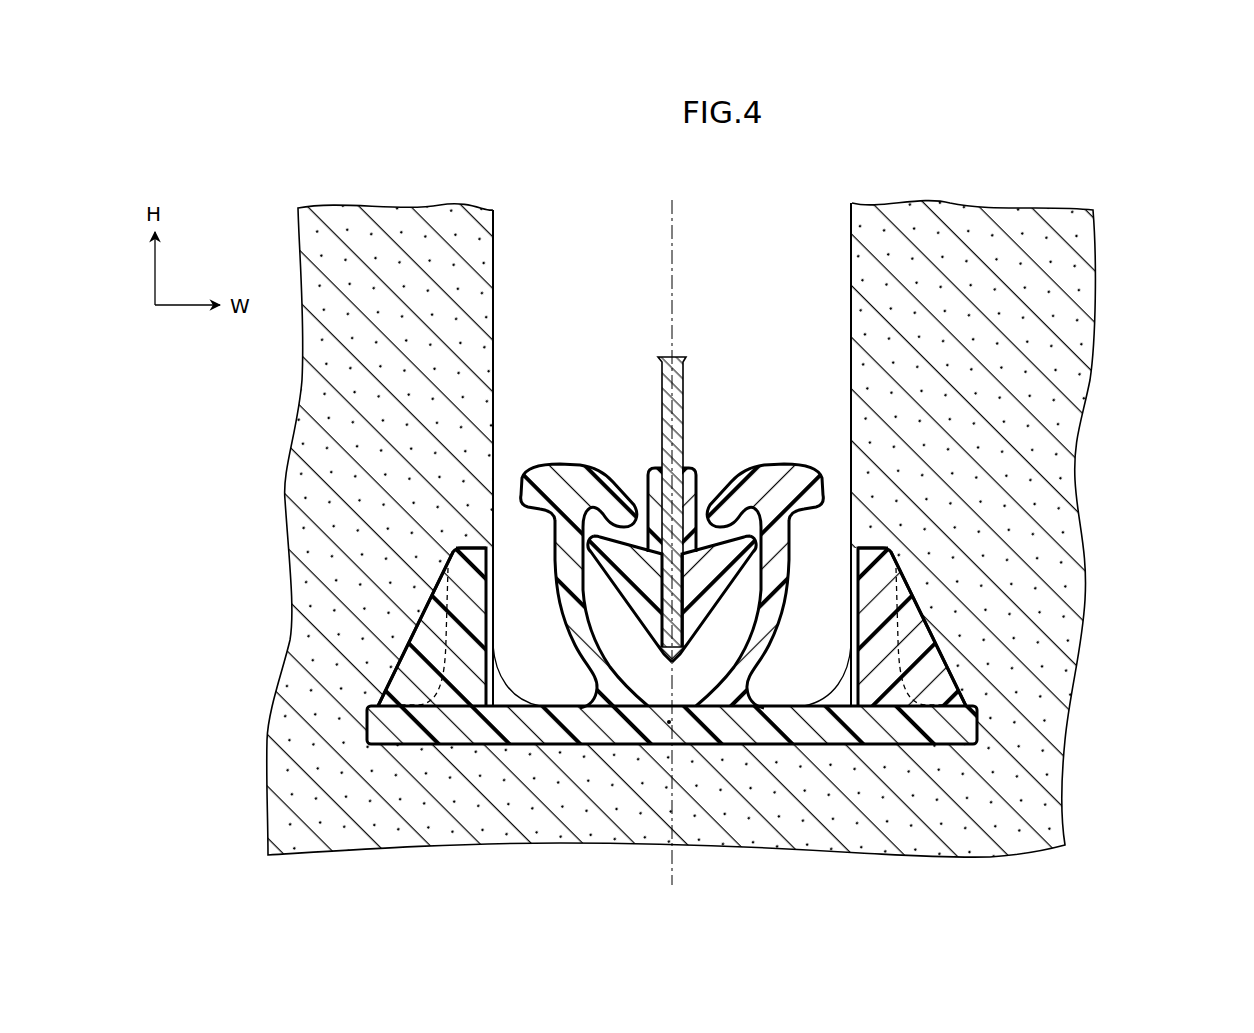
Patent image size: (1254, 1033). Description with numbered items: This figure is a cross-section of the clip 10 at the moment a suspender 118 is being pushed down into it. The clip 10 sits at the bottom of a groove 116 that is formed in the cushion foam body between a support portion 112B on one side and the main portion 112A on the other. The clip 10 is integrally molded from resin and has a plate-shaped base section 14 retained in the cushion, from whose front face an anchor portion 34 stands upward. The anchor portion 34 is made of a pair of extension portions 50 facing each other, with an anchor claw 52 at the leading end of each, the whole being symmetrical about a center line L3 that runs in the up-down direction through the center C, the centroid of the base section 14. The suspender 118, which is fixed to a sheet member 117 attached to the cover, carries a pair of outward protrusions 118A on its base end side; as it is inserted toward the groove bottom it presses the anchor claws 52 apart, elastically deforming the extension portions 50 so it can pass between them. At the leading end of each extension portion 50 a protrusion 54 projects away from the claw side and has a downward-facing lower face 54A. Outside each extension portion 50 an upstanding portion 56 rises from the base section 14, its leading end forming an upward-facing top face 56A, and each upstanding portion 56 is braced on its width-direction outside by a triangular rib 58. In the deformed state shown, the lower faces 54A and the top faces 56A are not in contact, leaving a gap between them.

The clip 10 is at (675, 562).
The base section 14 is at (845, 752).
The anchor portion 34 is at (570, 388).
The extension portion 50 is at (563, 648).
The anchor claw 52 is at (614, 470).
The protrusion 54 is at (528, 466).
The lower face 54A is at (528, 518).
The upstanding portion 56 is at (432, 618).
The top face 56A is at (464, 548).
The triangular rib 58 is at (407, 648).
The main portion 112A is at (1072, 382).
The support portion 112B is at (300, 358).
The groove 116 is at (815, 253).
The sheet member 117 is at (690, 363).
The suspender 118 is at (704, 463).
The protrusion 118A is at (595, 563).
The center C is at (668, 723).
The center line L3 is at (676, 867).